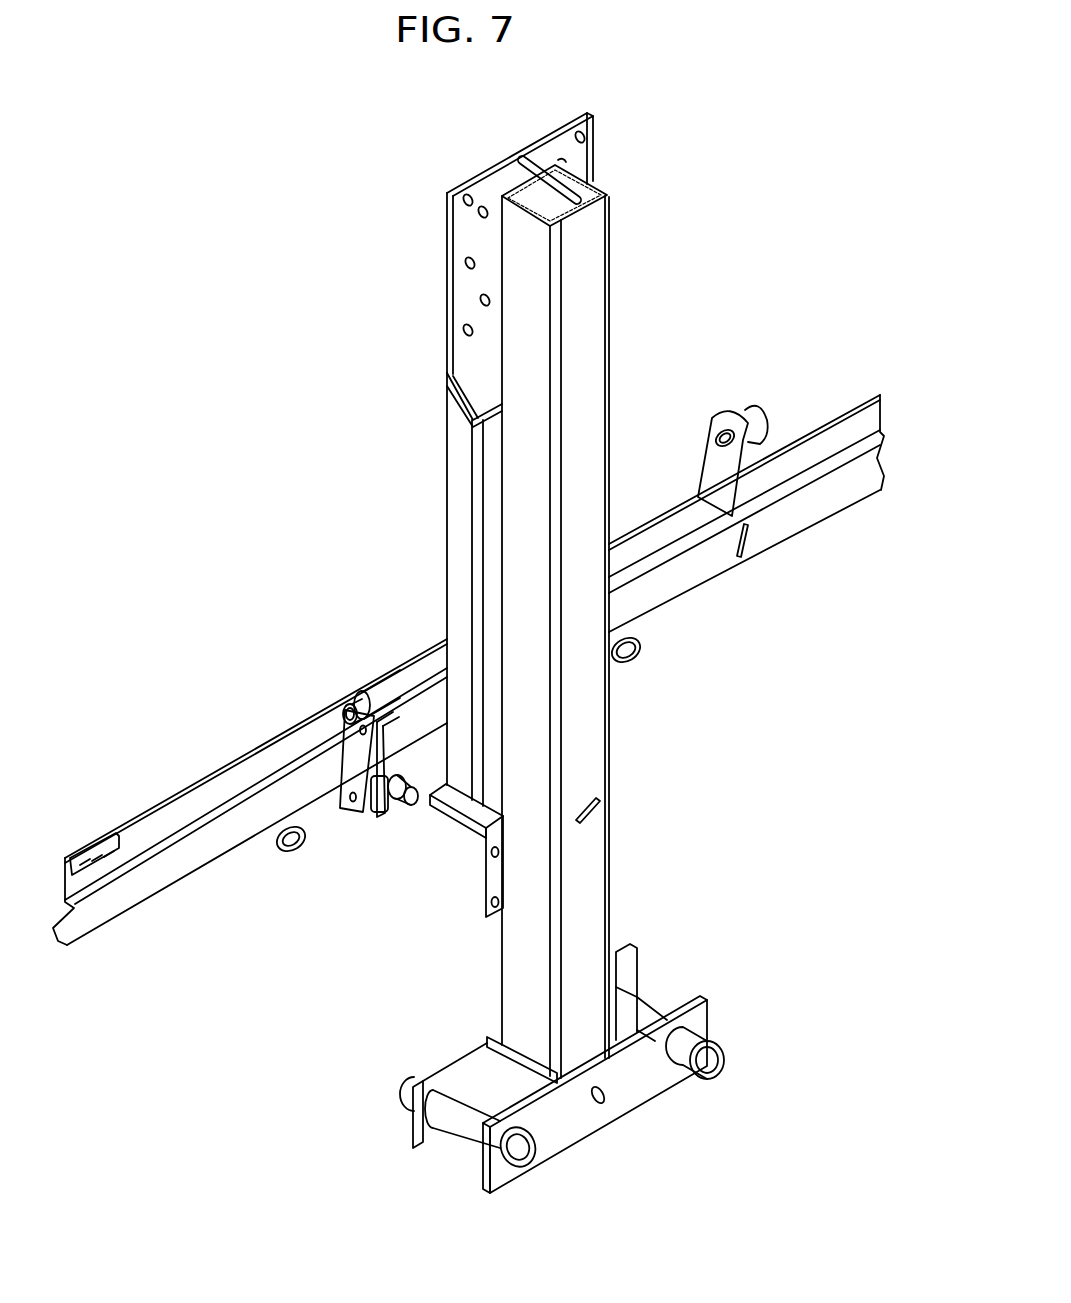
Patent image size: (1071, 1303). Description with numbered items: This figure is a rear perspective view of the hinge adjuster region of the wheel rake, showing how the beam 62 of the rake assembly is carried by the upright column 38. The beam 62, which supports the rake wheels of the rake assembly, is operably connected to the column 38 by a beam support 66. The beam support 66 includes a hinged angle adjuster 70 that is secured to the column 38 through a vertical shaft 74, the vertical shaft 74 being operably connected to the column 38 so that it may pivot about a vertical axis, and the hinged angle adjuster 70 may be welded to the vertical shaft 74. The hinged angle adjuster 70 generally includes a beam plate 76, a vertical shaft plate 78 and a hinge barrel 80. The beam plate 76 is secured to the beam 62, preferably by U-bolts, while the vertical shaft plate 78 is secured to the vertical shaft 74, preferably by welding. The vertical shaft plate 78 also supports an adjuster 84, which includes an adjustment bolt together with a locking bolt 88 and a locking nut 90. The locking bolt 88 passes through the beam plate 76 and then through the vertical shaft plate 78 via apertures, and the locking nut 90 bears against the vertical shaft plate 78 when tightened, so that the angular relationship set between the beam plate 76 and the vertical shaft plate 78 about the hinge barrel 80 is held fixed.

The column 38 is at (612, 748).
The beam 62 is at (145, 905).
The beam support 66 is at (407, 662).
The hinged angle adjuster 70 is at (403, 805).
The vertical shaft 74 is at (443, 468).
The beam plate 76 is at (362, 815).
The vertical shaft plate 78 is at (405, 750).
The hinge barrel 80 is at (393, 698).
The adjuster 84 is at (426, 808).
The locking bolt 88 is at (375, 815).
The locking nut 90 is at (418, 808).